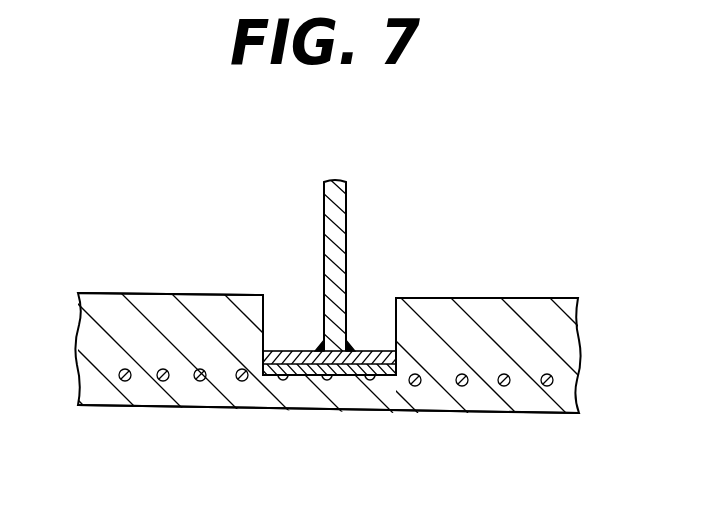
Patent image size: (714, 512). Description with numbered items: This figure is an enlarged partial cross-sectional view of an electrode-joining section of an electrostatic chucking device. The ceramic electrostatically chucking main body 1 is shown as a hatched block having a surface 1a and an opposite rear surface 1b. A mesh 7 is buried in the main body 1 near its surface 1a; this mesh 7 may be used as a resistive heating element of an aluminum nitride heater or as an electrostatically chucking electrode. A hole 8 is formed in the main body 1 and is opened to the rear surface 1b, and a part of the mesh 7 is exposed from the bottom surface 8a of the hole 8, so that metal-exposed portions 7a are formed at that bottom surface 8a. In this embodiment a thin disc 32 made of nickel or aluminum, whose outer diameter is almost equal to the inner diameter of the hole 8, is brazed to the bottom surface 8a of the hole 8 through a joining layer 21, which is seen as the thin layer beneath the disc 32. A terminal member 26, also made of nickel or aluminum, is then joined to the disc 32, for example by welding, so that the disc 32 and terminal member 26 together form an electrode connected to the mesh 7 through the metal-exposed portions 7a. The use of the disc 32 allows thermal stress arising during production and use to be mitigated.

The electrostatically chucking main body 1 is at (550, 355).
The surface 1a is at (203, 408).
The rear surface 1b is at (160, 292).
The mesh 7 is at (128, 381).
The metal-exposed portions 7a is at (284, 381).
The hole 8 is at (265, 312).
The bottom surface of the hole 8a is at (347, 381).
The joining layer 21 is at (396, 375).
The terminal member 26 is at (347, 212).
The thin disc 32 is at (376, 351).